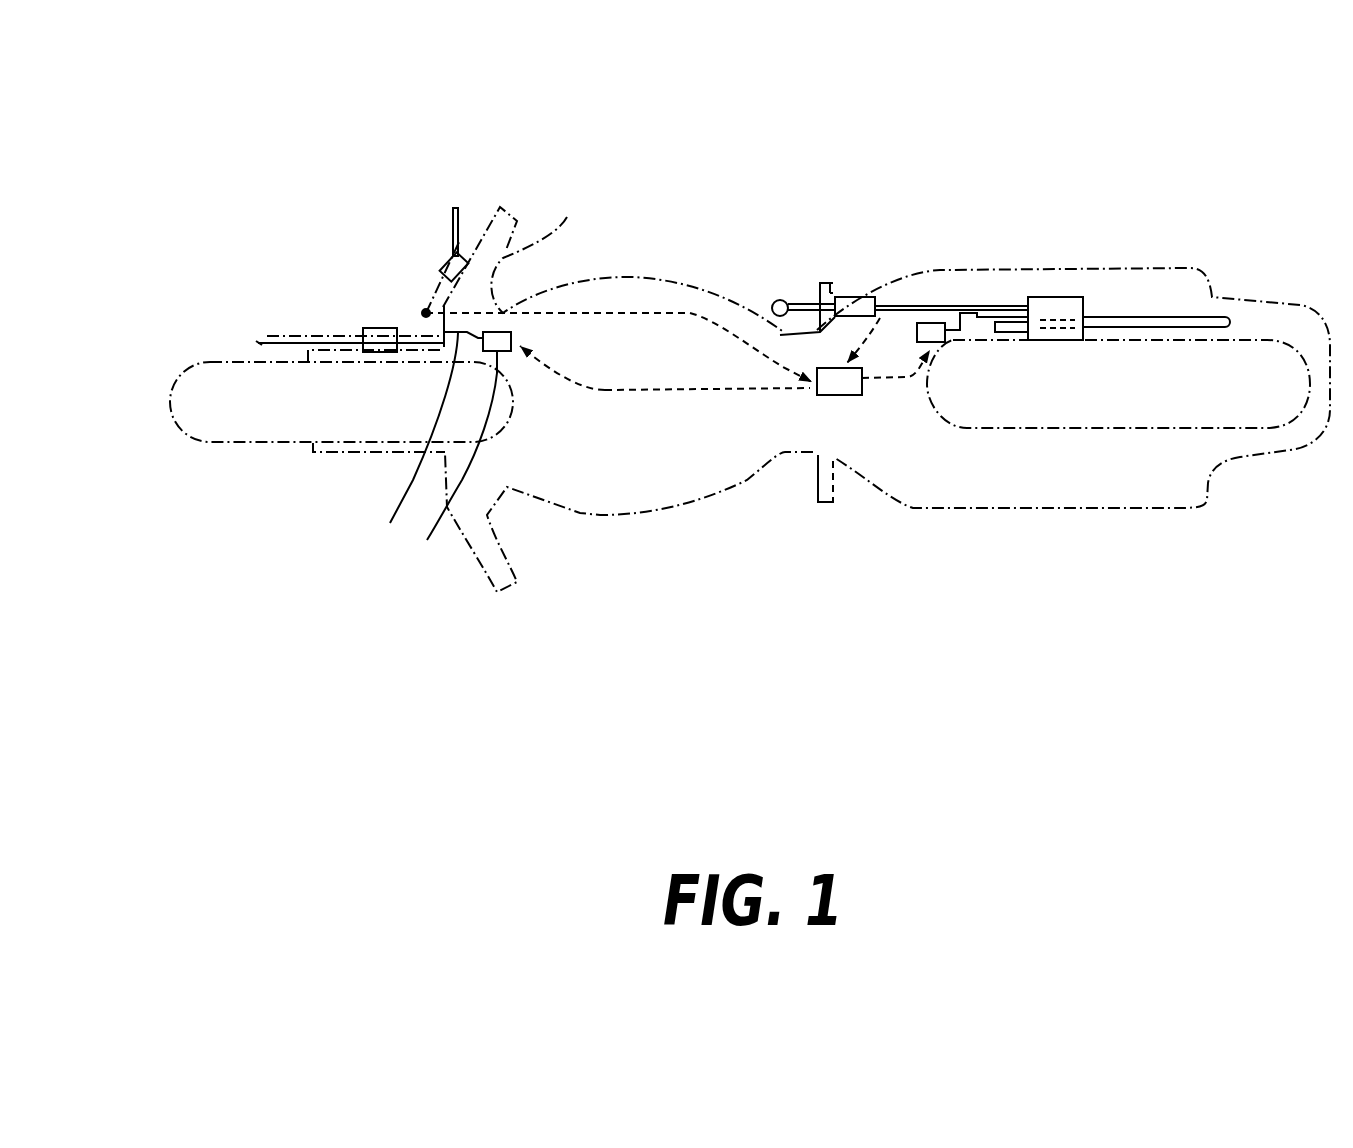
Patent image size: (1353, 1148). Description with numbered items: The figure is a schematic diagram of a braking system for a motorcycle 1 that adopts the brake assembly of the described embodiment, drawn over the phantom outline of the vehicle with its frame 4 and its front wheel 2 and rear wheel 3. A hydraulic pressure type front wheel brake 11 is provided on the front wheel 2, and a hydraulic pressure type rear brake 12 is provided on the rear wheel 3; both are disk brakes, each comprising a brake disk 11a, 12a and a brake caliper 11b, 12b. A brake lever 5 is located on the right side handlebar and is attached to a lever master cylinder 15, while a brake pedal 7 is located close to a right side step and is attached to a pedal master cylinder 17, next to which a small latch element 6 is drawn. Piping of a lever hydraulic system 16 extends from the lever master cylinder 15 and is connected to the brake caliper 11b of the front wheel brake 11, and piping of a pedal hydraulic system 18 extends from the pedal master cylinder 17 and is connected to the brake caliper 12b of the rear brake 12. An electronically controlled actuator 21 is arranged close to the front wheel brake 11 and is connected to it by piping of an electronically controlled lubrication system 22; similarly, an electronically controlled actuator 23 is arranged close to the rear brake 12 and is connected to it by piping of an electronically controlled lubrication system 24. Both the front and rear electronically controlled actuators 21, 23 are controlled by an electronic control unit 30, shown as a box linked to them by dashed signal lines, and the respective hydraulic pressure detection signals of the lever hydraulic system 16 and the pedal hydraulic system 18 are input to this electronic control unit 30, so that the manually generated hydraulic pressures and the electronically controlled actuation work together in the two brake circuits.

The motorcycle 1 is at (702, 244).
The front wheel 2 is at (227, 443).
The wheel 3 is at (1152, 430).
The vehicle body frame 4 is at (562, 223).
The brake lever 5 is at (450, 248).
The latch 6 is at (822, 283).
The brake pedal 7 is at (782, 300).
The front wheel brake 11 is at (342, 328).
The brake disk 11a is at (256, 343).
The brake caliper 11b is at (380, 328).
The rear brake 12 is at (1104, 292).
The brake disk 12a is at (1184, 318).
The brake caliper 12b is at (1050, 297).
The lever master cylinder 15 is at (444, 262).
The lever hydraulic system 16 is at (427, 311).
The pedal master cylinder 17 is at (852, 297).
The pedal hydraulic system 18 is at (942, 305).
The electronically controlled actuator 21 is at (451, 468).
The electronically controlled lubrication system 22 is at (581, 436).
The electronically controlled actuator 23 is at (933, 346).
The electronically controlled lubrication system 24 is at (979, 319).
The electronic control unit (ECU) 30 is at (852, 396).